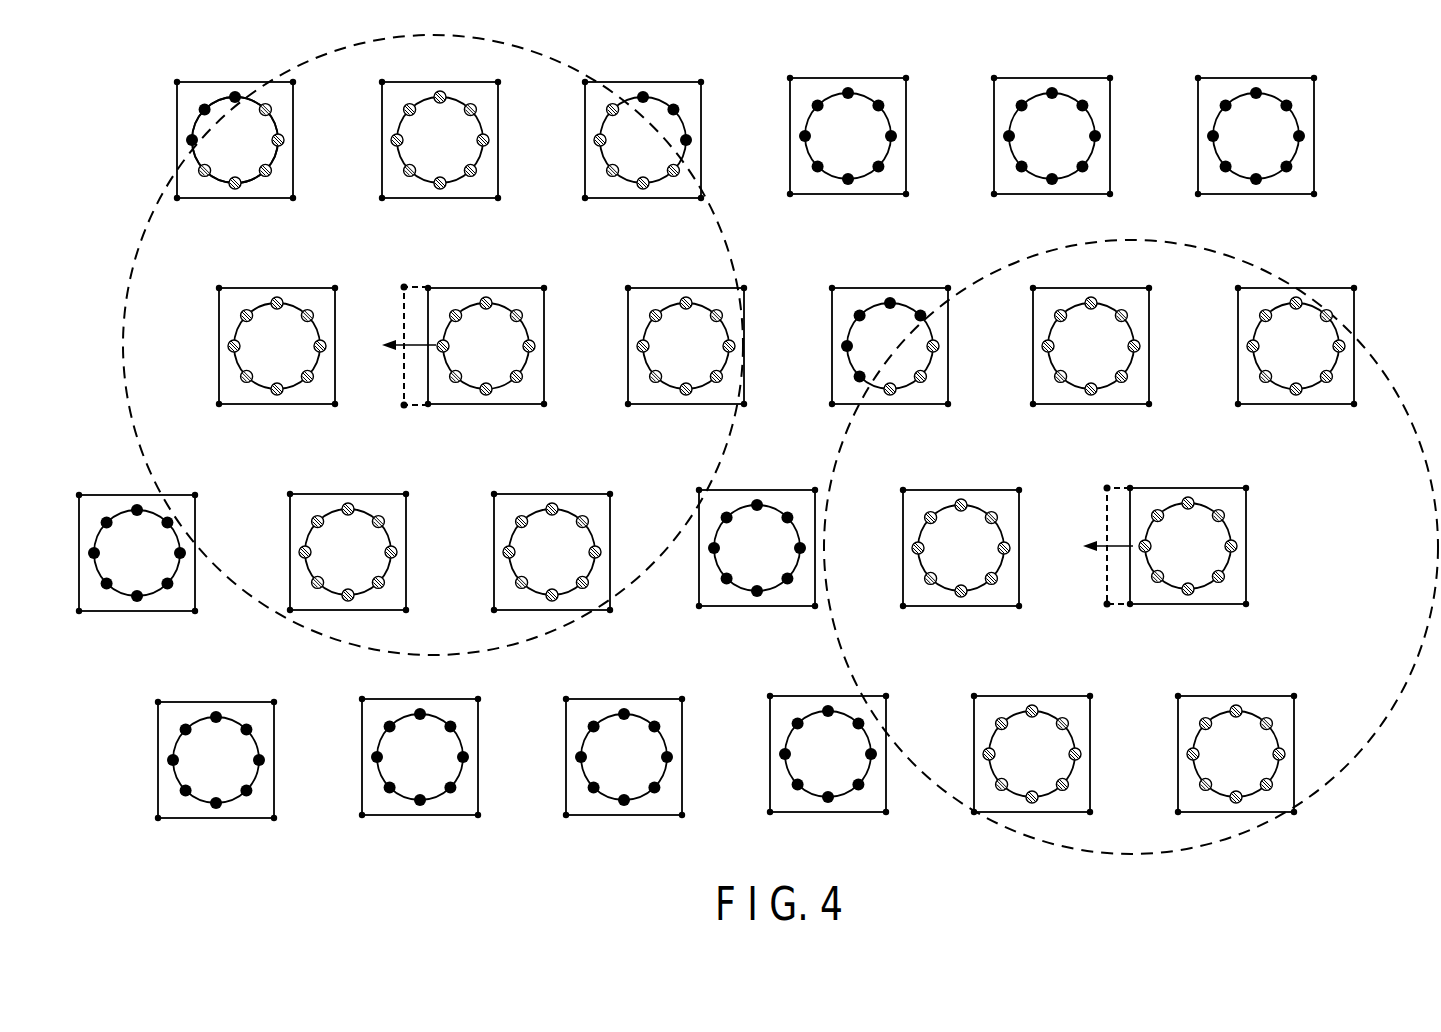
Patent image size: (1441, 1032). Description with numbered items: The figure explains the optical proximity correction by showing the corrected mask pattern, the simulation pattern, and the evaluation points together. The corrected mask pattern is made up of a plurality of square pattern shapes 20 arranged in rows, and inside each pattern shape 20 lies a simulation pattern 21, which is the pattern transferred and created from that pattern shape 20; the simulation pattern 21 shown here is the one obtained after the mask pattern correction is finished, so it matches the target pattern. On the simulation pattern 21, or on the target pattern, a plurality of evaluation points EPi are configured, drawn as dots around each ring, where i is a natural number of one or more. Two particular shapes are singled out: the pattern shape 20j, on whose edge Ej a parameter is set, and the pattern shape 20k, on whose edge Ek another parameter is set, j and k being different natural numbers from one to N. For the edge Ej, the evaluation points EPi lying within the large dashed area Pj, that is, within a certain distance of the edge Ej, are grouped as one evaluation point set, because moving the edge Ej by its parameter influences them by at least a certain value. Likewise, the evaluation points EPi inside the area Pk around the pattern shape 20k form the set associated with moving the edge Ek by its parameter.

The pattern shape 20 is at (237, 81).
The simulation pattern 21 is at (215, 98).
The pattern shape 20j is at (487, 288).
The pattern shape 20k is at (1190, 488).
The edge Ej is at (428, 301).
The edge Ek is at (1130, 502).
The evaluation point EPi is at (487, 396).
The area Pj is at (124, 350).
The area Pk is at (836, 470).